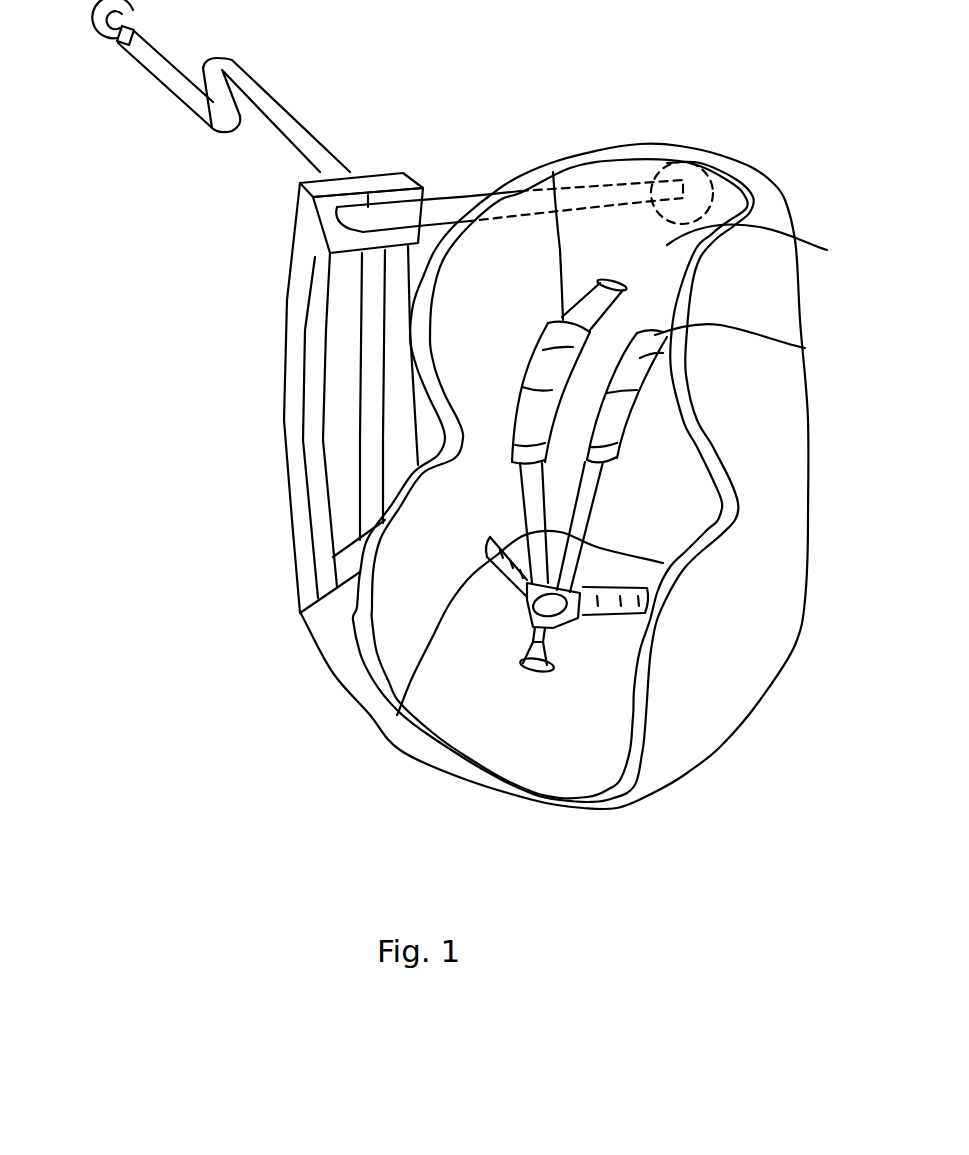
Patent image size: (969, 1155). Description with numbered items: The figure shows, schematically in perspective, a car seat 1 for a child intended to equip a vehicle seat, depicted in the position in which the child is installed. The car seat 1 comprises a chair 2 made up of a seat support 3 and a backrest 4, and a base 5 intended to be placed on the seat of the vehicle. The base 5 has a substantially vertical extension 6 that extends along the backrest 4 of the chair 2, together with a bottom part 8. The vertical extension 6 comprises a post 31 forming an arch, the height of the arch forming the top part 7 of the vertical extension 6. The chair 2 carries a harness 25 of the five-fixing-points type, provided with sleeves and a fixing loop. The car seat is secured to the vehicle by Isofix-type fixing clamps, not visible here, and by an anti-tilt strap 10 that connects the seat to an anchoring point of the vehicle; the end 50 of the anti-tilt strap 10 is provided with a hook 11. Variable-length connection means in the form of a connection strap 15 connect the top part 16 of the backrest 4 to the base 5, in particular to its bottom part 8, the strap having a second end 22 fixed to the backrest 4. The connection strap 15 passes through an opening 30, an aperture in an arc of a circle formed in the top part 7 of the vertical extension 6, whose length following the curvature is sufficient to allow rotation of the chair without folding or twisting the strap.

The car seat 1 is at (720, 143).
The chair 2 is at (782, 445).
The seat support 3 is at (560, 720).
The backrest 4 is at (827, 250).
The base 5 is at (300, 612).
The vertical extension 6 is at (287, 395).
The top part 7 is at (323, 222).
The bottom part 8 is at (367, 710).
The anti-tilt strap 10 is at (300, 136).
The hook 11 is at (96, 18).
The connection strap 15 is at (445, 213).
The top part 16 is at (585, 207).
The second end 22 is at (675, 182).
The harness 25 is at (805, 348).
The opening 30 is at (393, 197).
The post 31 is at (313, 453).
The end 50 is at (143, 50).